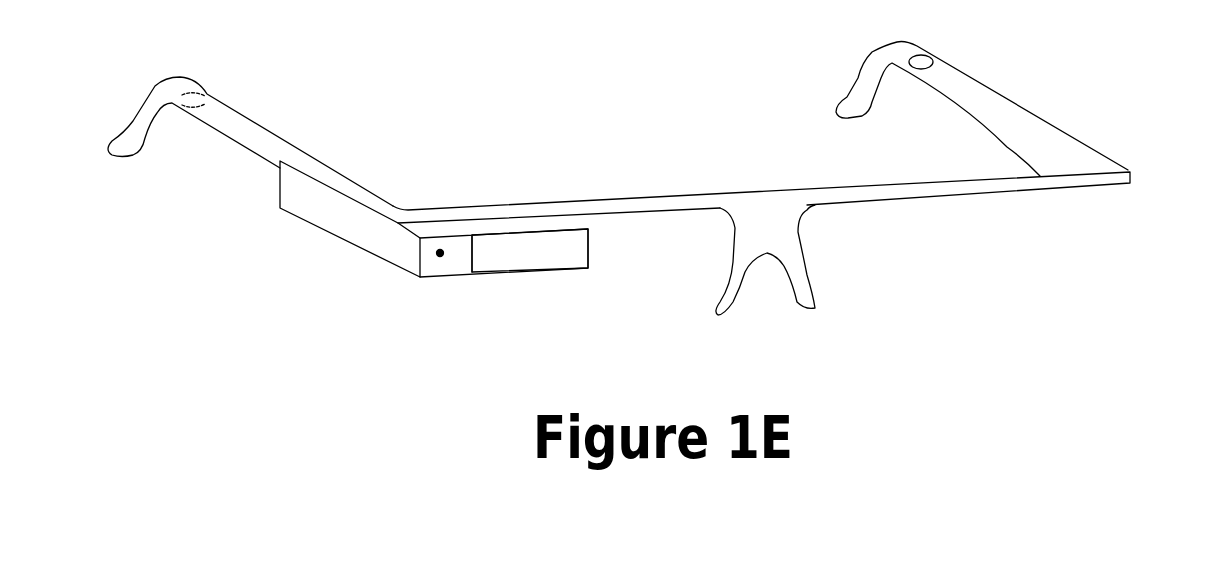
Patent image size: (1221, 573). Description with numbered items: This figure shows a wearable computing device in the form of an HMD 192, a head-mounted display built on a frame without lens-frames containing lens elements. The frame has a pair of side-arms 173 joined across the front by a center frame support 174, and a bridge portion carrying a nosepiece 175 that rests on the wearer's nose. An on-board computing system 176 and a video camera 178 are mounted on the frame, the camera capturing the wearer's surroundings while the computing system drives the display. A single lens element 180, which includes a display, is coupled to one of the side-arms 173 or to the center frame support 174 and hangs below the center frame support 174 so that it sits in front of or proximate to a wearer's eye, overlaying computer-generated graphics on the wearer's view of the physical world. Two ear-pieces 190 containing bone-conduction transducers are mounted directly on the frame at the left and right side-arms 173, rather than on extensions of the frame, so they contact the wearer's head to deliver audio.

The side-arms 173 is at (247, 128).
The center frame support 174 is at (643, 202).
The nosepiece 175 is at (793, 250).
The on-board computing system 176 is at (322, 232).
The video camera 178 is at (438, 258).
The single lens element 180 is at (535, 270).
The ear-pieces 190 is at (197, 107).
The HMD 192 is at (1115, 237).